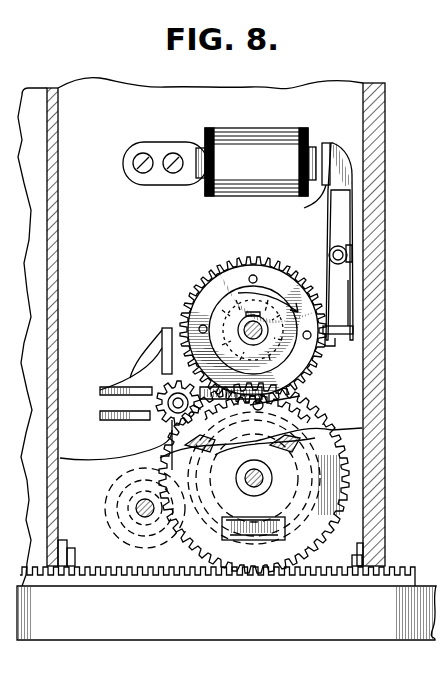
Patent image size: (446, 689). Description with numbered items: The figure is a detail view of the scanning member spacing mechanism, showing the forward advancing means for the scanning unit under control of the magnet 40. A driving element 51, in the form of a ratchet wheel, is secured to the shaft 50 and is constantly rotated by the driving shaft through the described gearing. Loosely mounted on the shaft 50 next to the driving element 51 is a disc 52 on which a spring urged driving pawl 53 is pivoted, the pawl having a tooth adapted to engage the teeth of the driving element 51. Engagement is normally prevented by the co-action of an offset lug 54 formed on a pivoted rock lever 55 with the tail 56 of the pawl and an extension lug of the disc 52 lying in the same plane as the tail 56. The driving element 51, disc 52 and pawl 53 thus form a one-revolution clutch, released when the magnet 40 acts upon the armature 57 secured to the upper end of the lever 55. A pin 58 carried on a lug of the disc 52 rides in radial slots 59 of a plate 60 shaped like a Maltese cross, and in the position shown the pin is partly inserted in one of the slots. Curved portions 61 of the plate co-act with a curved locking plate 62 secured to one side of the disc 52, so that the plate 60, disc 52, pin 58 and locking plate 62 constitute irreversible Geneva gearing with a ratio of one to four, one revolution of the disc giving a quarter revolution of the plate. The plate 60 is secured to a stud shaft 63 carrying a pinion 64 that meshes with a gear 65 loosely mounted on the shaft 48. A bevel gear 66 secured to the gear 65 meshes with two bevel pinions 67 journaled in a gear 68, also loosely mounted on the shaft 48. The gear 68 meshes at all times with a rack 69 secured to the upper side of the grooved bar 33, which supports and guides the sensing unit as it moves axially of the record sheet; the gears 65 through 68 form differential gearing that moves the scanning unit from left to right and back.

The grooved bar 33 is at (120, 615).
The magnet 40 is at (236, 138).
The shaft 48 is at (254, 487).
The shaft 50 is at (251, 335).
The driving element 51 is at (226, 265).
The disc 52 is at (205, 292).
The driving pawl 53 is at (312, 382).
The offset lug 54 is at (345, 330).
The rock lever 55 is at (328, 272).
The tail 56 is at (330, 342).
The armature 57 is at (306, 182).
The pin 58 is at (282, 420).
The radial slots 59 is at (105, 403).
The plate 60 is at (160, 373).
The curved portions 61 is at (162, 340).
The locking plate 62 is at (213, 302).
The stud shaft 63 is at (172, 412).
The pinion 64 is at (160, 400).
The gear 65 is at (140, 462).
The bevel gear 66 is at (300, 418).
The bevel pinions 67 is at (257, 540).
The gear 68 is at (325, 497).
The rack 69 is at (340, 590).